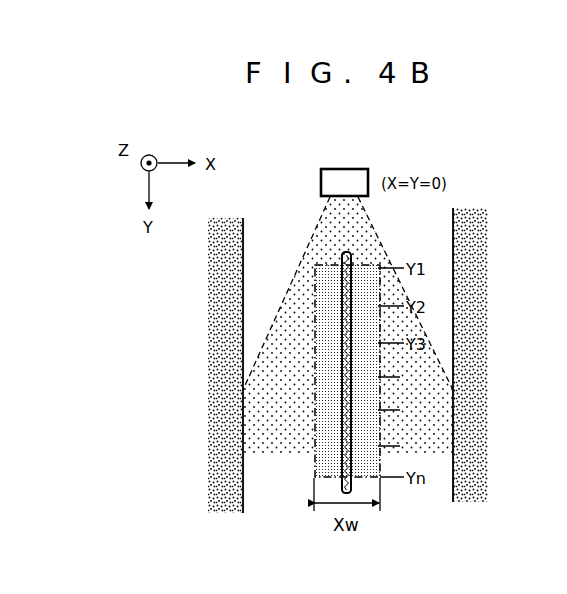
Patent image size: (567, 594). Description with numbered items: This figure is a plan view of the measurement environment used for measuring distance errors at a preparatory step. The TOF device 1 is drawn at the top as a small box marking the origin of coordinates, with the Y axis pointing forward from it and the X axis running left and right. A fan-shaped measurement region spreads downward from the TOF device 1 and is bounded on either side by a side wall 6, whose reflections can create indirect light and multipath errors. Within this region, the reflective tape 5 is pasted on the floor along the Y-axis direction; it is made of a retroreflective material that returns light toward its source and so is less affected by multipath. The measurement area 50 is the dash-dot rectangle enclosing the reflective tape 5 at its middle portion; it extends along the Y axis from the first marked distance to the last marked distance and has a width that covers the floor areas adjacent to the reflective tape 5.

The TOF device 1 is at (345, 169).
The reflective tape 5 is at (342, 420).
The side wall 6 is at (225, 333).
The measurement area 50 is at (315, 309).